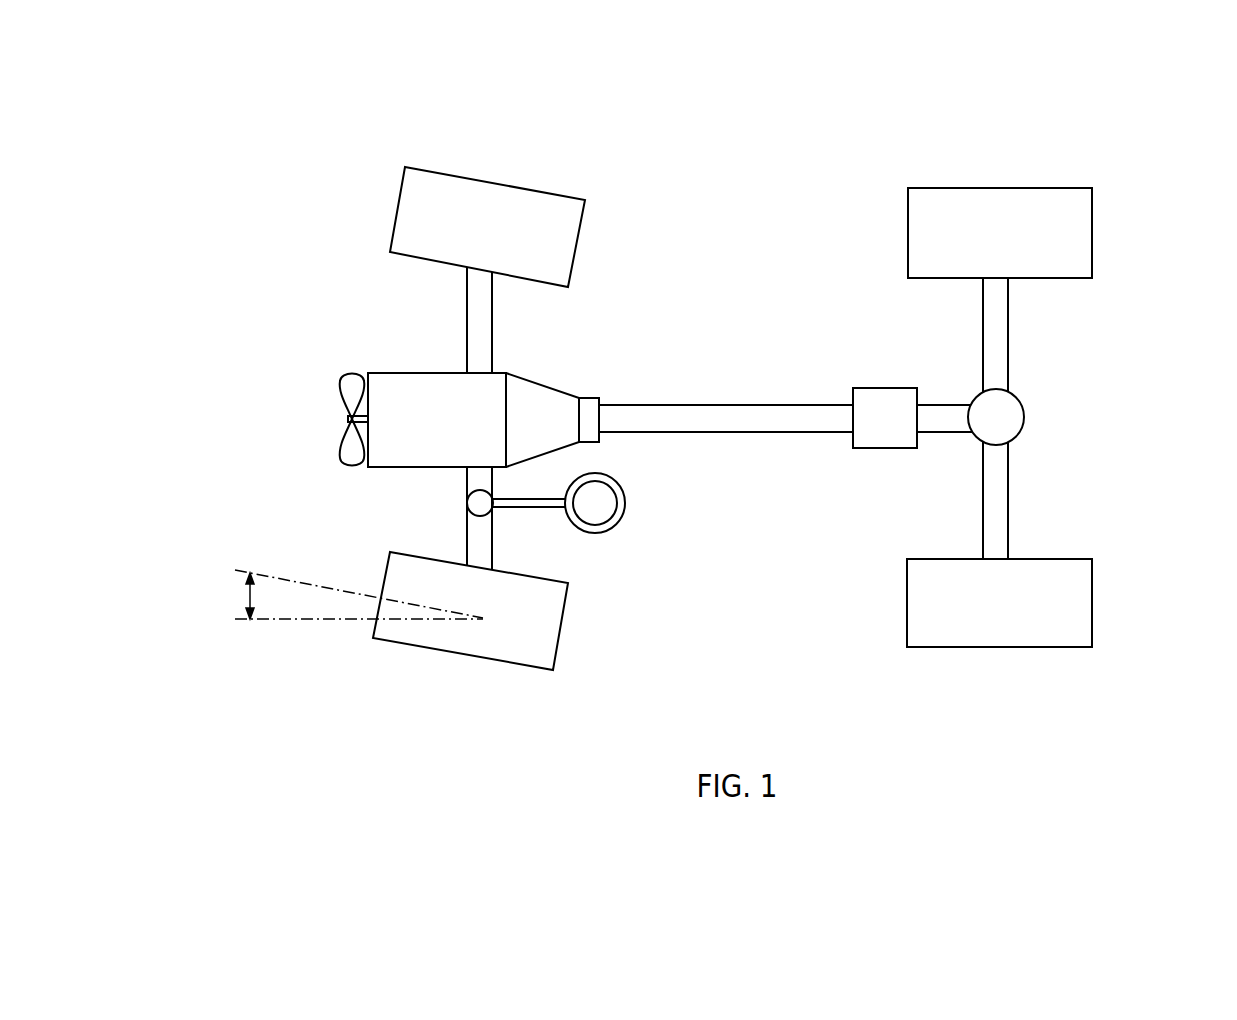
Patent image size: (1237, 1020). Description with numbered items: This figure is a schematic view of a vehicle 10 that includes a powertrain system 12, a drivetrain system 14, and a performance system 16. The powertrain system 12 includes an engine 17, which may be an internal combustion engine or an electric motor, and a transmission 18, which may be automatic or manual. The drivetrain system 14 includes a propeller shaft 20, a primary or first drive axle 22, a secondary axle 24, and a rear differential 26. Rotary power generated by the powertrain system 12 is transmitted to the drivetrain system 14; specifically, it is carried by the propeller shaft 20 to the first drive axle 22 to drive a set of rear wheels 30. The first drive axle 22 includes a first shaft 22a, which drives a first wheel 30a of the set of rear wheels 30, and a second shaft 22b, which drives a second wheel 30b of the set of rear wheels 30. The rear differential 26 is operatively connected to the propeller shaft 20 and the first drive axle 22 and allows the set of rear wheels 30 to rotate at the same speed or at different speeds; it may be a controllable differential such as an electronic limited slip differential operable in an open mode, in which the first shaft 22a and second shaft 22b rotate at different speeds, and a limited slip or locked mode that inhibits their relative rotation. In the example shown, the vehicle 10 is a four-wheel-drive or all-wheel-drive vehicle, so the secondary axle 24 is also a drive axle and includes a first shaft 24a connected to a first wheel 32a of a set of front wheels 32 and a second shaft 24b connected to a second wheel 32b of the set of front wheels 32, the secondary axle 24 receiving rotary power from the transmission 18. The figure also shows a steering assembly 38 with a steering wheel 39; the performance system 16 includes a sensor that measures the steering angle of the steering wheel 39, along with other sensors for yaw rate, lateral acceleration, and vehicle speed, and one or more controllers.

The vehicle 10 is at (846, 118).
The powertrain system 12 is at (372, 318).
The drivetrain system 14 is at (741, 362).
The performance system 16 is at (881, 388).
The engine 17 is at (398, 379).
The transmission 18 is at (550, 388).
The propeller shaft 20 is at (752, 432).
The first drive axle 22 is at (1041, 418).
The first shaft 22a is at (1010, 338).
The second shaft 22b is at (1010, 497).
The secondary axle 24 is at (483, 418).
The first shaft 24a is at (467, 307).
The second shaft 24b is at (467, 510).
The rear differential 26 is at (1024, 416).
The set of rear wheels 30 is at (1045, 387).
The first wheel 30a is at (1055, 188).
The second wheel 30b is at (1092, 597).
The set of front wheels 32 is at (522, 416).
The first wheel 32a is at (462, 177).
The second wheel 32b is at (461, 655).
The steering assembly 38 is at (650, 502).
The steering wheel 39 is at (540, 508).